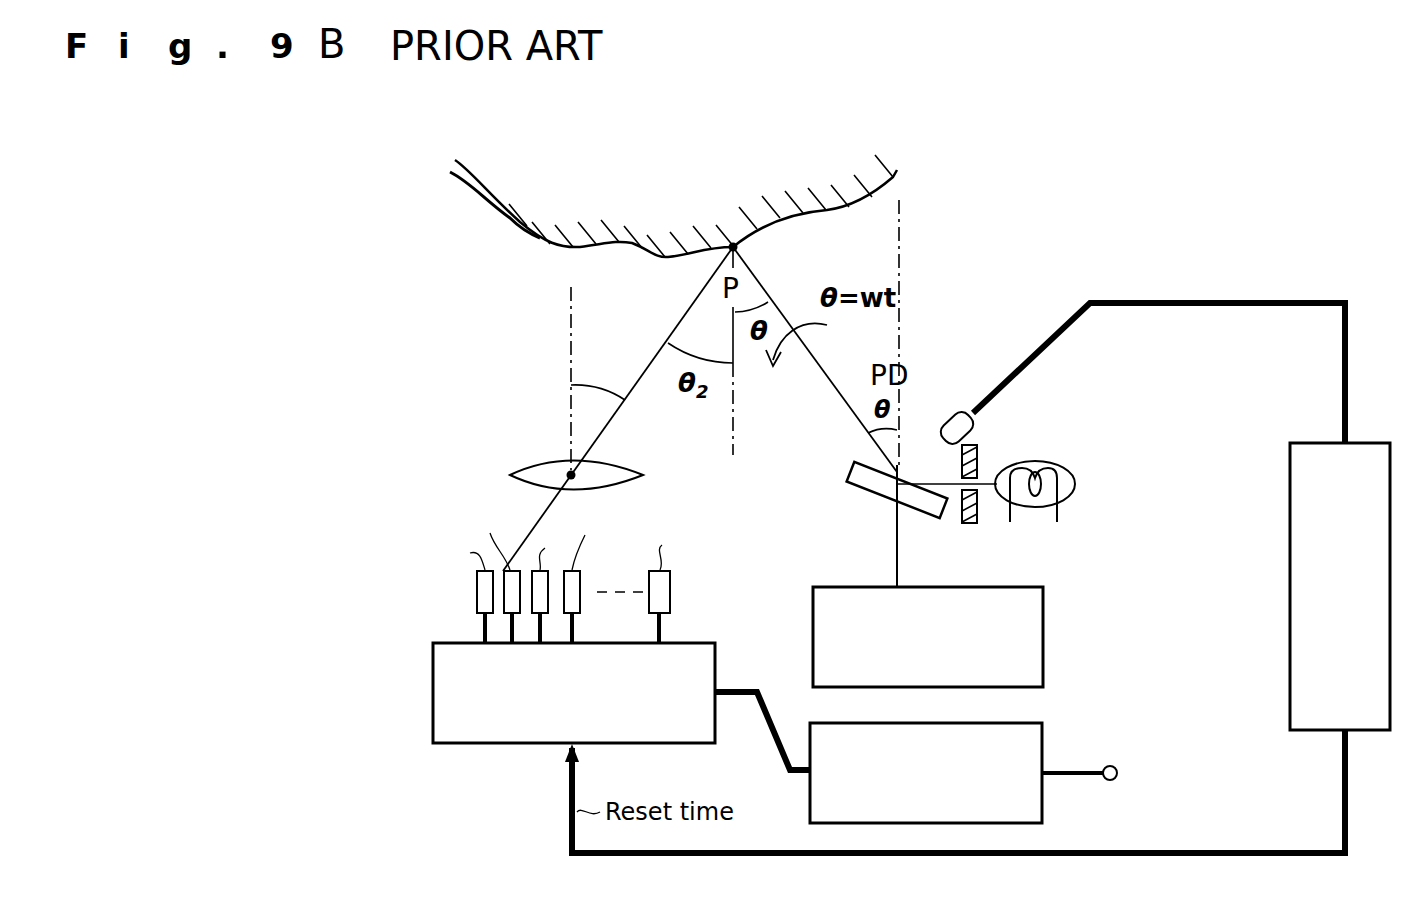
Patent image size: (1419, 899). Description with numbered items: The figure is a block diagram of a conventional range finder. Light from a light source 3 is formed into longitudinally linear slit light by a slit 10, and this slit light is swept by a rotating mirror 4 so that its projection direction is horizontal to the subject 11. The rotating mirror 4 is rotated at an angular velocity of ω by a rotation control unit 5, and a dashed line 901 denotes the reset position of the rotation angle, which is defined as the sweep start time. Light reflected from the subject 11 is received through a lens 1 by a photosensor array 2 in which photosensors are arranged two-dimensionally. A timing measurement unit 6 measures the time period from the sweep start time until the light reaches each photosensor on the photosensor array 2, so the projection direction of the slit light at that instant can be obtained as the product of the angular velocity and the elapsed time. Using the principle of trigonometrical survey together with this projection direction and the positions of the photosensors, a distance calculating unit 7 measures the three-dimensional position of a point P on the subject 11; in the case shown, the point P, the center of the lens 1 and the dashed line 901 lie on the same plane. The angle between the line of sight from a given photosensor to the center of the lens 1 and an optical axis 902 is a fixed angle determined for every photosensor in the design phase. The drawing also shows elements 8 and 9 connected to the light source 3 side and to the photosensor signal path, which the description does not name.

The lens 1 is at (530, 462).
The photosensor array 2 is at (453, 570).
The light source 3 is at (1075, 486).
The rotating mirror 4 is at (905, 520).
The rotation control unit 5 is at (1043, 632).
The timing measurement unit 6 is at (703, 643).
The distance calculating unit 7 is at (1042, 733).
The light source 8 is at (966, 410).
The PD signal amplifier unit 9 is at (1298, 732).
The slit 10 is at (978, 458).
The subject 11 is at (860, 176).
The dashed line 901 is at (903, 222).
The optical axis 902 is at (568, 304).